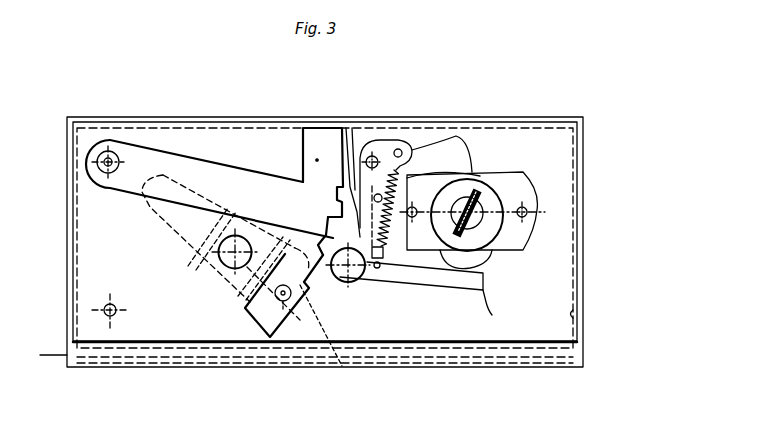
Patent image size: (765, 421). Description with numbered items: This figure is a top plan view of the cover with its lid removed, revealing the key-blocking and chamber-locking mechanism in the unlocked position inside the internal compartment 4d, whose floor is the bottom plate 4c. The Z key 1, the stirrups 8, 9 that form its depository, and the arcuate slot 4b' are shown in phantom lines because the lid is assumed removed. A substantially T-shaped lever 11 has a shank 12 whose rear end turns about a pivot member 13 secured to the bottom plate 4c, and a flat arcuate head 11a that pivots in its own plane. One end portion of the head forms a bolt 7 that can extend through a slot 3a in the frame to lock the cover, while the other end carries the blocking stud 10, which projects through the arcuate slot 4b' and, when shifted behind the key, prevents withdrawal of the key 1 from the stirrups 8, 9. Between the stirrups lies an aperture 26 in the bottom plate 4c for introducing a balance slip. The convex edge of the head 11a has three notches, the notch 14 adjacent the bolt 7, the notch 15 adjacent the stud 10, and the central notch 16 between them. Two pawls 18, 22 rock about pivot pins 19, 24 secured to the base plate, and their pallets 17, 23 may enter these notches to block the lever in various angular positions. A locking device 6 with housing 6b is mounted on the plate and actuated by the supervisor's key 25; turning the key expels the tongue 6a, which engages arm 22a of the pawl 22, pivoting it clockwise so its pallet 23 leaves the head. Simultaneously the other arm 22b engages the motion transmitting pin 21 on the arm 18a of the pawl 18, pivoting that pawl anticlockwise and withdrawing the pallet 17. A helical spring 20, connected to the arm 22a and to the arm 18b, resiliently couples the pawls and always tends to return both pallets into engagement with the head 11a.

The Z key 1 is at (166, 223).
The slot 3a is at (306, 110).
The arcuate slot 4b' is at (329, 336).
The bottom plate 4c is at (577, 270).
The internal compartment 4d is at (583, 324).
The locking device 6 is at (470, 172).
The tongue 6a is at (487, 266).
The housing 6b is at (510, 178).
The bolt 7 is at (343, 127).
The stirrup 8 is at (241, 302).
The stirrup 9 is at (190, 262).
The blocking stud 10 is at (285, 312).
The T-shaped lever 11 is at (301, 160).
The head 11a is at (327, 172).
The shank 12 is at (205, 168).
The pivot member 13 is at (110, 150).
The notch 14 is at (334, 193).
The notch 15 is at (304, 283).
The central notch 16 is at (322, 232).
The pallet 17 is at (333, 236).
The pawl 18 is at (412, 144).
The arm 18a is at (404, 187).
The arm 18b is at (405, 140).
The pivot pin 19 is at (377, 152).
The helical spring 20 is at (412, 180).
The motion transmitting pin 21 is at (389, 227).
The pawl 22 is at (458, 290).
The arm 22a is at (502, 310).
The arm 22b is at (325, 208).
The pallet 23 is at (356, 127).
The pivot pin 24 is at (349, 283).
The key 25 is at (528, 212).
The aperture 26 is at (240, 245).